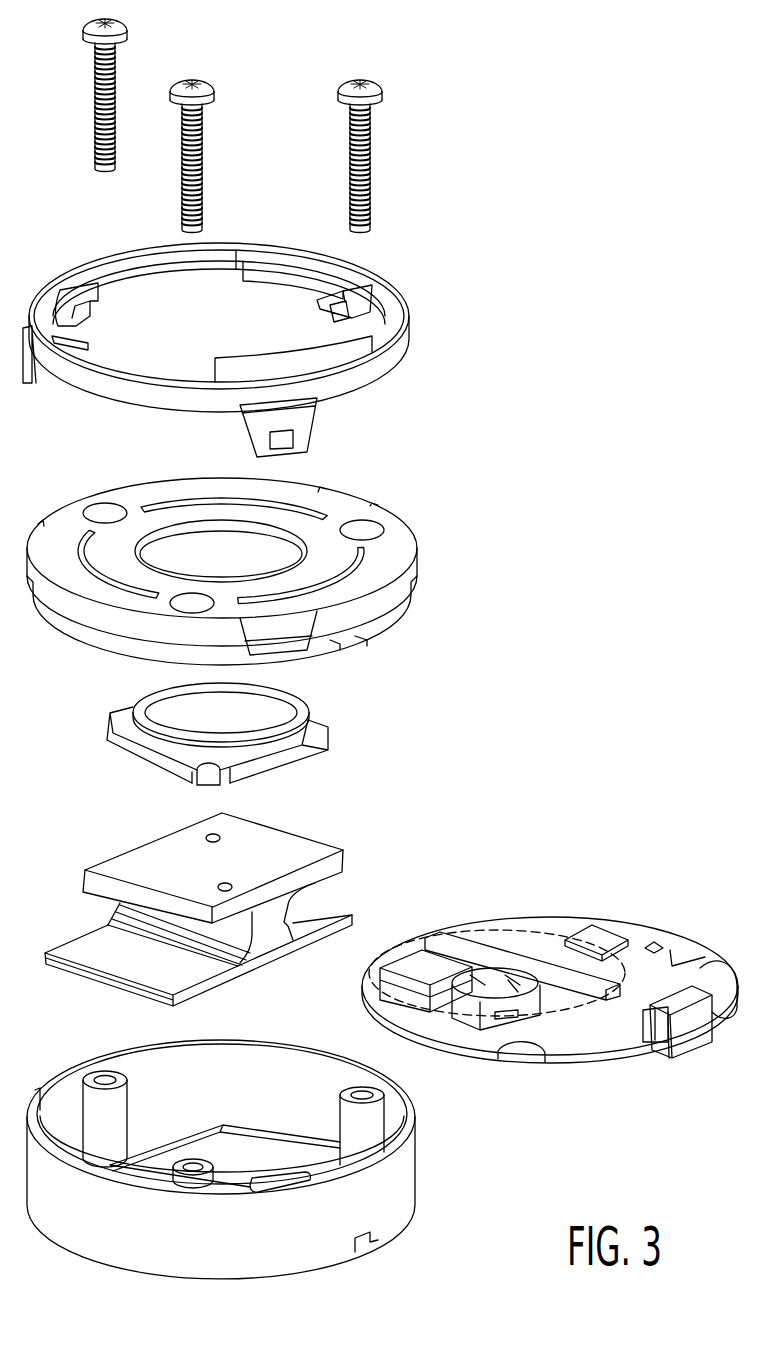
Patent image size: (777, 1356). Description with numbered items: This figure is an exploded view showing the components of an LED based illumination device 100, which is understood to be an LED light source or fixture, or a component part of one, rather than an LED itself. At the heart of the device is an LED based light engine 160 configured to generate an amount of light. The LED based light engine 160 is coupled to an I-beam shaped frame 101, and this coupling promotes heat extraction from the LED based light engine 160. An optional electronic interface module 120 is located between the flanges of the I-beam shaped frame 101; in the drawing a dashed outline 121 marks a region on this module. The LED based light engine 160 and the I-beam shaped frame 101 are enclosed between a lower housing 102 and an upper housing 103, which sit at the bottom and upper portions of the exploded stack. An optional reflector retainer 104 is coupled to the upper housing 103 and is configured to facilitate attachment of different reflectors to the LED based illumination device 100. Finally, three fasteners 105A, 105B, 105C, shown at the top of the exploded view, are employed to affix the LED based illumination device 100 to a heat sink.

The LED based illumination device 100 is at (675, 126).
The I-beam shaped frame 101 is at (307, 853).
The lower housing 102 is at (404, 1177).
The upper housing 103 is at (401, 550).
The reflector retainer 104 is at (401, 316).
The fastener 105A is at (372, 173).
The fastener 105B is at (95, 92).
The fastener 105C is at (203, 173).
The electronic interface module (EIM) 120 is at (547, 931).
The component region on circuit board 121 is at (394, 933).
The LED based light engine 160 is at (318, 735).